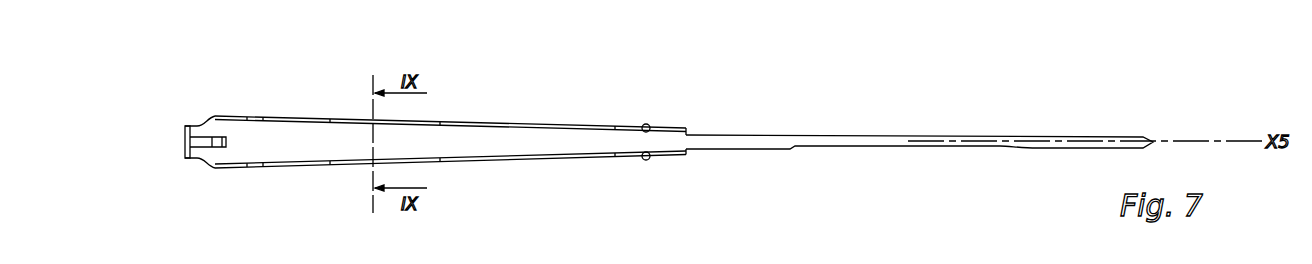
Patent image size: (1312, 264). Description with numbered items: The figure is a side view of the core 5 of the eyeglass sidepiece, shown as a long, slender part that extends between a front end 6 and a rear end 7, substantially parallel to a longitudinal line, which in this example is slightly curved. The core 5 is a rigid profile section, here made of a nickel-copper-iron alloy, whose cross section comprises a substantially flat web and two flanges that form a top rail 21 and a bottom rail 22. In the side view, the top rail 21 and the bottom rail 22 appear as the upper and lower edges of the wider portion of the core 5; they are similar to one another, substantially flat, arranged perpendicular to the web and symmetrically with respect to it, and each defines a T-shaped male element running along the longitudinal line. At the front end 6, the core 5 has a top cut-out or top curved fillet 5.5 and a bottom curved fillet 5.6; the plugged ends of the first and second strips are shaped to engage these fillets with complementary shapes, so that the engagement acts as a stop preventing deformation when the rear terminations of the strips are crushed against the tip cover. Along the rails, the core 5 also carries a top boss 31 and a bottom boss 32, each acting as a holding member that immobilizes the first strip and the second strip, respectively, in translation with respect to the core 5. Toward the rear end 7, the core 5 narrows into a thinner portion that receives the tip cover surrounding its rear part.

The core 5 is at (483, 143).
The top curved fillet 5.5 is at (195, 123).
The bottom curved fillet 5.6 is at (196, 160).
The front end 6 is at (203, 95).
The rear end 7 is at (1042, 121).
The top rail 21 is at (292, 115).
The bottom rail 22 is at (293, 178).
The top boss 31 is at (646, 124).
The bottom boss 32 is at (646, 160).